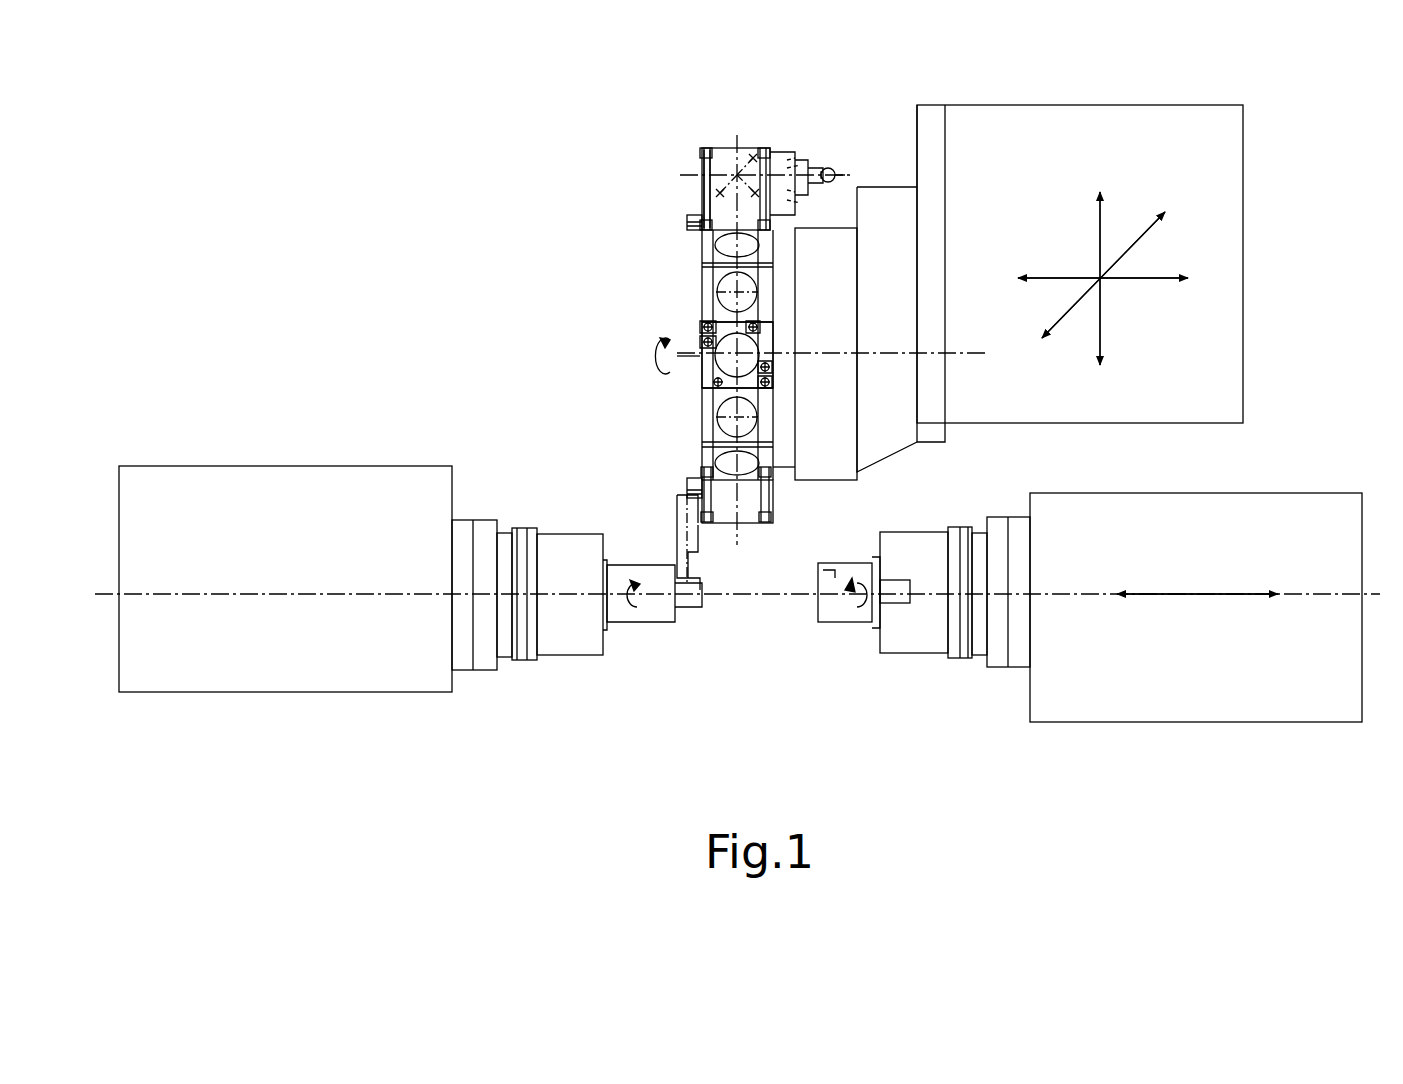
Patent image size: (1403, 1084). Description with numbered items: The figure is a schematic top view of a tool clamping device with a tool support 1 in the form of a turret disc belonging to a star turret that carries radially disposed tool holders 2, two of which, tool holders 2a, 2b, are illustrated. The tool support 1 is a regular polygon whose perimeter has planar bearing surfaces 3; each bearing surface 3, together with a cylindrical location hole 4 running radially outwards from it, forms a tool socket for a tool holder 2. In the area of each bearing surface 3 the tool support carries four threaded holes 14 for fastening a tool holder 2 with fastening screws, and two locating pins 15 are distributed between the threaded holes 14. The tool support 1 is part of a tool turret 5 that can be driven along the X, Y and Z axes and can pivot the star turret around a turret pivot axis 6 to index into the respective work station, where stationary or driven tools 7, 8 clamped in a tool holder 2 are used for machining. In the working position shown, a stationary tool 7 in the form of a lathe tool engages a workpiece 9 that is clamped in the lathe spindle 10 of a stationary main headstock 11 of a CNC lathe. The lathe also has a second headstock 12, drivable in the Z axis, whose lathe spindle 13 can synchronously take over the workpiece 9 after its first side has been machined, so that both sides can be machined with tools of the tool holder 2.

The tool support 1 is at (700, 290).
The tool holder 2 is at (700, 176).
The tool holder 2a is at (722, 148).
The tool holder 2b is at (748, 515).
The bearing surface 3 is at (702, 378).
The location hole 4 is at (677, 350).
The tool turret 5 is at (1010, 138).
The turret pivot axis 6 is at (820, 345).
The stationary tool 7 is at (692, 560).
The tool 8 is at (823, 160).
The workpiece 9 is at (650, 613).
The lathe spindle 10 is at (560, 648).
The main headstock 11 is at (273, 677).
The second headstock 12 is at (1130, 705).
The lathe spindle 13 is at (917, 640).
The threaded hole 14 is at (707, 327).
The locating pin 15 is at (705, 148).